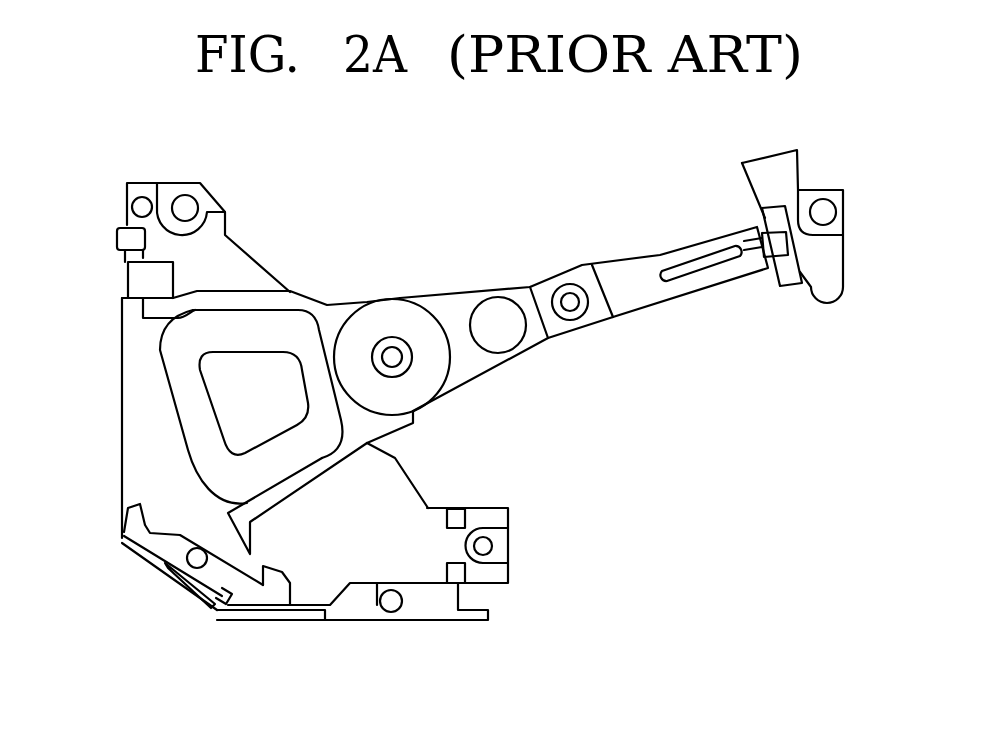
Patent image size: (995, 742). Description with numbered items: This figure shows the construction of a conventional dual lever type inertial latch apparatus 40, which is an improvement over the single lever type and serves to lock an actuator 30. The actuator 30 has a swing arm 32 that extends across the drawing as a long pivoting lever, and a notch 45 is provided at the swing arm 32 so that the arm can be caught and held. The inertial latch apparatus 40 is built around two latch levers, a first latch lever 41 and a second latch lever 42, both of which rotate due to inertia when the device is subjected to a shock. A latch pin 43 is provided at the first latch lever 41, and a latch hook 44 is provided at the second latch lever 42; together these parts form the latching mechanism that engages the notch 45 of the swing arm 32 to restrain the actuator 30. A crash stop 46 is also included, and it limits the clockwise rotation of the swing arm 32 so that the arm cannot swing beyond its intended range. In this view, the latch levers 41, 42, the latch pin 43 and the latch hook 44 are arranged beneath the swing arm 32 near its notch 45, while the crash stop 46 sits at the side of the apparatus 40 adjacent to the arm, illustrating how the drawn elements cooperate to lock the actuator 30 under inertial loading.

The actuator 30 is at (517, 250).
The swing arm 32 is at (493, 367).
The inertial latch apparatus 40 is at (283, 640).
The first latch lever 41 is at (437, 612).
The second latch lever 42 is at (127, 546).
The latch pin 43 is at (218, 622).
The latch hook 44 is at (269, 572).
The notch 45 is at (251, 533).
The crash stop 46 is at (137, 279).